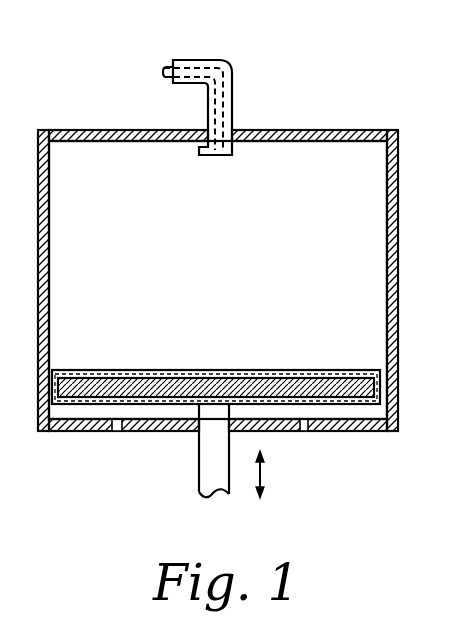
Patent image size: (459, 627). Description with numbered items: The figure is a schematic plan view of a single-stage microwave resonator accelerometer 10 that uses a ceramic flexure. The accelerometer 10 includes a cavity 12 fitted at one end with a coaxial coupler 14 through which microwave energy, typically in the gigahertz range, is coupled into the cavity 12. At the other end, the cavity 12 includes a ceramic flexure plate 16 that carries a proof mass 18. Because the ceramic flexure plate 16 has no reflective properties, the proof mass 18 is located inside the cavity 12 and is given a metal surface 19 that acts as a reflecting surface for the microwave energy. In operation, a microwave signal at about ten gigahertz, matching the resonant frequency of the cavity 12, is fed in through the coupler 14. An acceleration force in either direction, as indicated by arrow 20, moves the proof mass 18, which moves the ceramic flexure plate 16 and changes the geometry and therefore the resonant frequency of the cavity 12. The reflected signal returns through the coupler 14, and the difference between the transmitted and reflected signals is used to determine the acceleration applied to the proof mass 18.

The single-stage microwave resonator accelerometer 10 is at (218, 28).
The cavity 12 is at (233, 247).
The coaxial coupler 14 is at (235, 88).
The ceramic flexure plate 16 is at (148, 434).
The proof mass 18 is at (240, 371).
The metal surface 19 is at (307, 371).
The arrow 20 is at (267, 473).